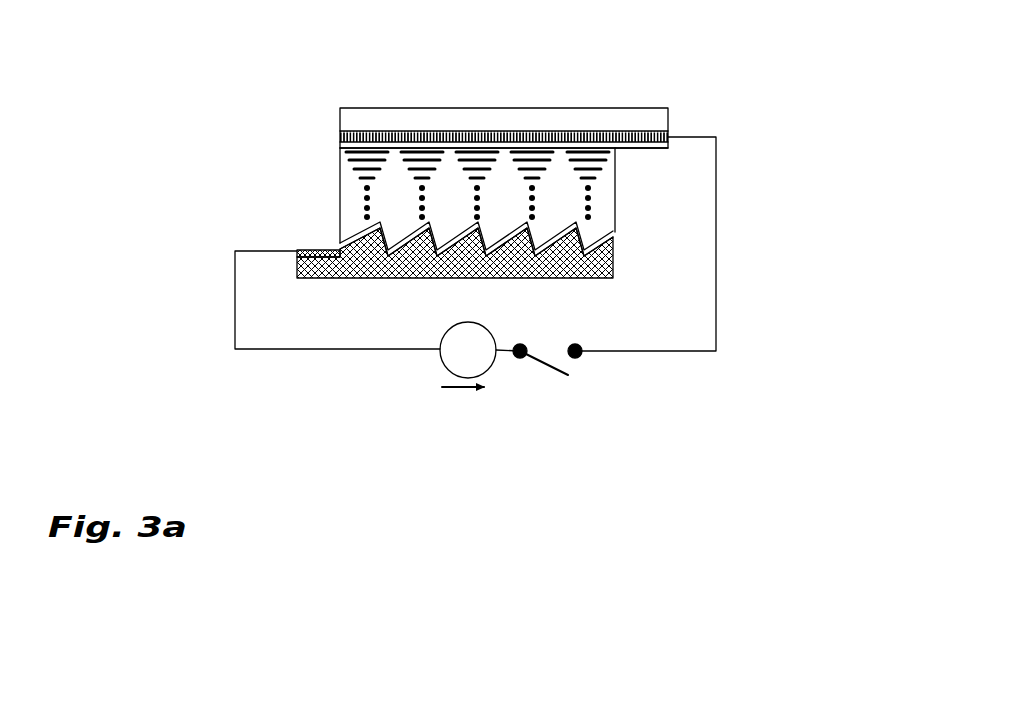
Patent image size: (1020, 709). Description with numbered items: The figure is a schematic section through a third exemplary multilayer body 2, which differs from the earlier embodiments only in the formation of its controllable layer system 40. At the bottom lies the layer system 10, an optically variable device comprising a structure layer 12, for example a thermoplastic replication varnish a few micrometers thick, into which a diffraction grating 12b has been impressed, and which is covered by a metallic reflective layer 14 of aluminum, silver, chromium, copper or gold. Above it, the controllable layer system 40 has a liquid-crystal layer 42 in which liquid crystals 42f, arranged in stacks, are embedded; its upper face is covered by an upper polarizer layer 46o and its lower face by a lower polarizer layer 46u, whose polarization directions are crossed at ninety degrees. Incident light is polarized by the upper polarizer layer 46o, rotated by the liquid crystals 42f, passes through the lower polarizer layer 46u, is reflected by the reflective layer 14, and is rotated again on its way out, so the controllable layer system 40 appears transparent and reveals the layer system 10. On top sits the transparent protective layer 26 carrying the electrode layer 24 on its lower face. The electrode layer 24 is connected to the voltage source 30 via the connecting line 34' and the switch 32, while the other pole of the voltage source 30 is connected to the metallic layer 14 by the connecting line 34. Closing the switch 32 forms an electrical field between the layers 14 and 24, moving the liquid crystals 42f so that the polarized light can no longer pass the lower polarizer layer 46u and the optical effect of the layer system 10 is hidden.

The multilayer body 2 is at (184, 179).
The layer system 10 is at (619, 233).
The structure layer 12 is at (566, 278).
The diffraction grating 12b is at (355, 278).
The metallic reflective layer 14 is at (317, 250).
The electrode layer 24 is at (670, 133).
The transparent protective layer 26 is at (527, 118).
The voltage source 30 is at (458, 398).
The switch 32 is at (548, 375).
The connecting line 34 is at (331, 347).
The connecting line 34' is at (695, 244).
The controllable layer system 40 is at (296, 128).
The liquid-crystal layer 42 is at (617, 183).
The liquid crystals 42f is at (382, 137).
The upper polarizer layer 46o is at (664, 150).
The lower polarizer layer 46u is at (616, 215).